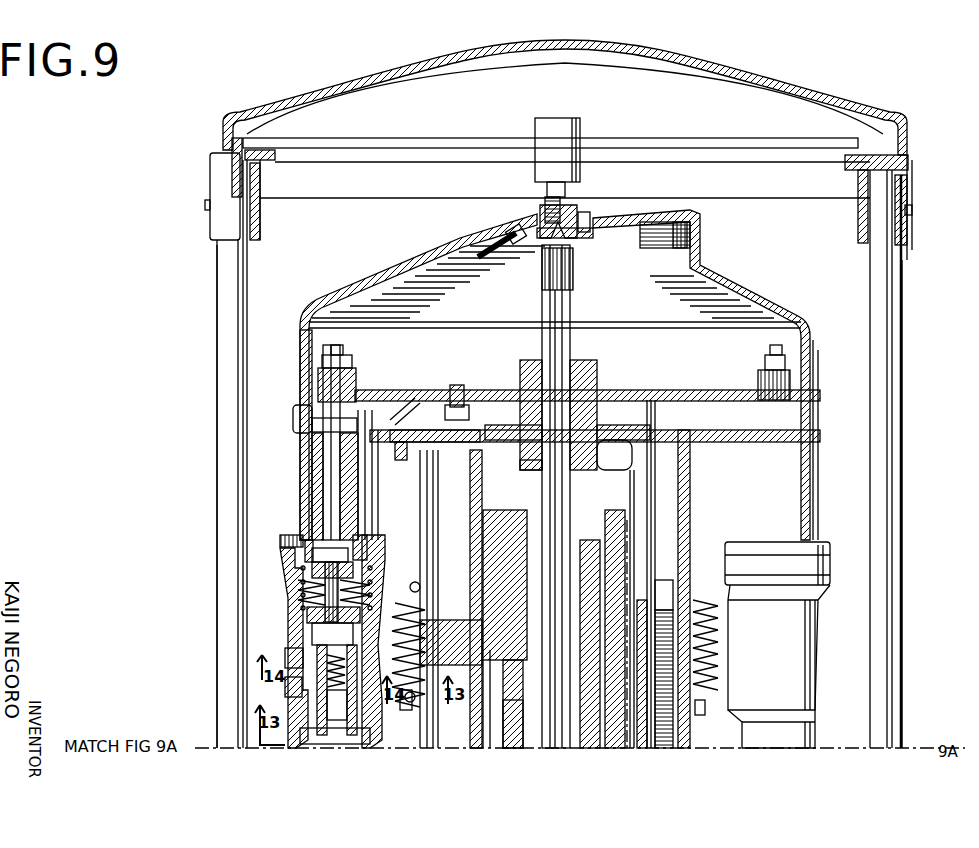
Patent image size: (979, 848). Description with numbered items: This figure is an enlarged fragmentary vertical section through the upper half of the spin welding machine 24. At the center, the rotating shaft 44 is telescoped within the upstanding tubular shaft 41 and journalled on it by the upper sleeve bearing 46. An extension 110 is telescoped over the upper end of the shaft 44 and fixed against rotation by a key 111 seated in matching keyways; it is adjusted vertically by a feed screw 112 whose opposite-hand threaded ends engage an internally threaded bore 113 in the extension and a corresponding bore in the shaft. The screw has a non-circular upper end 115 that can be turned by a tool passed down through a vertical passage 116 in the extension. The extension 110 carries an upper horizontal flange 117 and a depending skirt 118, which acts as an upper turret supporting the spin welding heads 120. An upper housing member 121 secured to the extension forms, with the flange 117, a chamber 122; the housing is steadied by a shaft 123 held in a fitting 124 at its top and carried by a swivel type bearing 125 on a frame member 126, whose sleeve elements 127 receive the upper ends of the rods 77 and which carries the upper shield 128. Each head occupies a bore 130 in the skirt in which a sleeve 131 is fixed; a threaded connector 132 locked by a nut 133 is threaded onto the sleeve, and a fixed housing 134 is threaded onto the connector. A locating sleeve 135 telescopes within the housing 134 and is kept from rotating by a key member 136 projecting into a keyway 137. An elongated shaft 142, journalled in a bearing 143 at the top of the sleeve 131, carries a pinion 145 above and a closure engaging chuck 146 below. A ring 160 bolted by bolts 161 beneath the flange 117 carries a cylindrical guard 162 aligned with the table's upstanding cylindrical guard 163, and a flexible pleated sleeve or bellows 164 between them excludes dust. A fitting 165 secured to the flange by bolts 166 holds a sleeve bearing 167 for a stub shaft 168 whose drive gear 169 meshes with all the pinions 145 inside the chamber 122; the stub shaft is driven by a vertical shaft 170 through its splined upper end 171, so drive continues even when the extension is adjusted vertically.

The spin welding machine 24 is at (928, 287).
The upstanding tubular shaft 41 is at (515, 748).
The rotating shaft 44 is at (500, 730).
The upper sleeve bearing 46 is at (480, 622).
The rods 77 is at (217, 366).
The extension 110 is at (470, 508).
The key 111 is at (627, 748).
The feed screw 112 is at (677, 750).
The internally threaded bore 113 is at (720, 648).
The non-circular cross sectional upper end 115 is at (668, 585).
The vertical passage 116 is at (672, 502).
The upper horizontal flange 117 is at (430, 432).
The depending skirt 118 is at (312, 494).
The spin welding head 120 is at (278, 606).
The upper housing member 121 is at (390, 272).
The chamber 122 is at (735, 285).
The shaft 123 is at (577, 200).
The fitting 124 is at (575, 252).
The swivel type bearing 125 is at (582, 128).
The frame member 126 is at (680, 140).
The sleeve elements 127 is at (260, 222).
The upper shield 128 is at (760, 66).
The bores 130 is at (300, 456).
The sleeve 131 is at (320, 504).
The connector 132 is at (820, 545).
The nut 133 is at (288, 536).
The fixed housing 134 is at (812, 628).
The locating sleeve 135 is at (812, 735).
The key member 136 is at (290, 650).
The keyway 137 is at (295, 688).
The elongated shaft 142 is at (325, 470).
The bearing 143 is at (312, 428).
The pinion 145 is at (355, 372).
The closure engaging chuck 146 is at (325, 748).
The ring 160 is at (396, 455).
The bolts 161 is at (420, 470).
The cylindrical guard 162 is at (420, 525).
The upstanding cylindrical guard 163 is at (690, 710).
The flexible pleated sleeve or bellows 164 is at (408, 585).
The fitting 165 is at (604, 452).
The bolts 166 is at (455, 388).
The sleeve bearing 167 is at (525, 450).
The stub shaft 168 is at (535, 470).
The drive gear 169 is at (655, 388).
The vertical shaft 170 is at (548, 748).
The splined upper end 171 is at (575, 322).